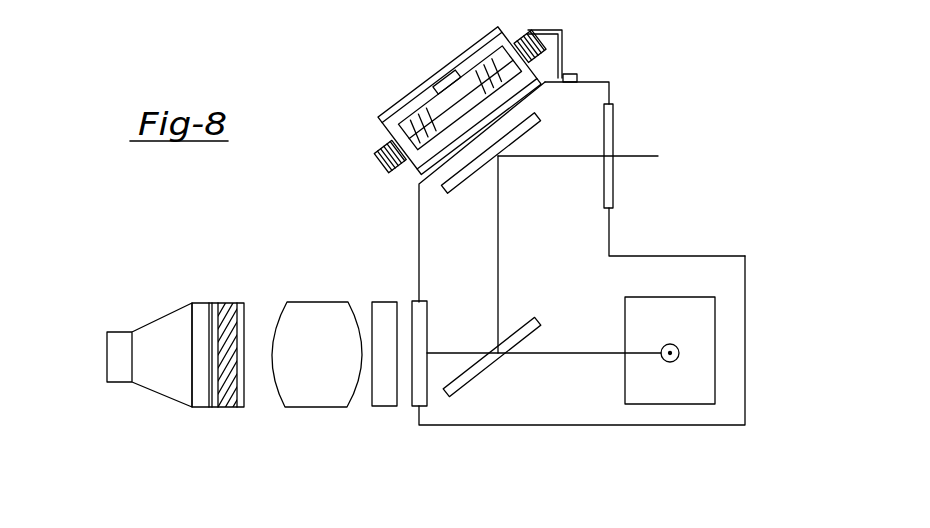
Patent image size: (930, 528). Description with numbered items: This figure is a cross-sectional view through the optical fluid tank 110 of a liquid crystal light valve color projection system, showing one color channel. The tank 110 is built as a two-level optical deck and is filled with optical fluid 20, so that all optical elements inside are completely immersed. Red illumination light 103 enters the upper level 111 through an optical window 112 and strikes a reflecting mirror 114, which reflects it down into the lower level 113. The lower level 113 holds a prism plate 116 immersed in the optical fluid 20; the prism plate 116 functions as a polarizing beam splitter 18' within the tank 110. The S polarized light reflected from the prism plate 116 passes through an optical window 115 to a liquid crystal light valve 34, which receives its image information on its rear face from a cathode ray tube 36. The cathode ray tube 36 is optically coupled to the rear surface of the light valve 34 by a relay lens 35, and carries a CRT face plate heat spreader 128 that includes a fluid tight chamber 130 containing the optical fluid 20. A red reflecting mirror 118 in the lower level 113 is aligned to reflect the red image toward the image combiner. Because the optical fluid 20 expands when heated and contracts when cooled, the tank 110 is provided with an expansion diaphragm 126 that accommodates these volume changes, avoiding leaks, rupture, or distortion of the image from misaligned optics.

The polarizing beam splitter 18' is at (544, 429).
The optical fluid 20 is at (537, 223).
The liquid crystal light valve 34 is at (385, 302).
The relay lens 35 is at (297, 407).
The cathode ray tube 36 is at (180, 310).
The red illumination light 103 is at (630, 156).
The optical fluid tank 110 is at (418, 215).
The upper level 111 is at (663, 195).
The optical window 112 is at (614, 118).
The lower level 113 is at (767, 353).
The reflecting mirror 114 is at (541, 115).
The optical window 115 is at (417, 392).
The prism plate 116 is at (512, 340).
The red reflecting mirror 118 is at (712, 322).
The expansion diaphragm 126 is at (463, 52).
The CRT face plate heat spreader 128 is at (210, 408).
The fluid tight chamber 130 is at (231, 302).